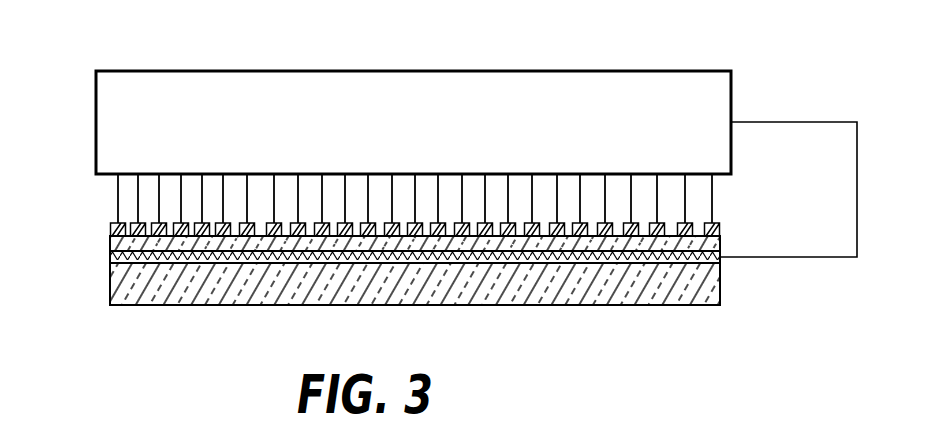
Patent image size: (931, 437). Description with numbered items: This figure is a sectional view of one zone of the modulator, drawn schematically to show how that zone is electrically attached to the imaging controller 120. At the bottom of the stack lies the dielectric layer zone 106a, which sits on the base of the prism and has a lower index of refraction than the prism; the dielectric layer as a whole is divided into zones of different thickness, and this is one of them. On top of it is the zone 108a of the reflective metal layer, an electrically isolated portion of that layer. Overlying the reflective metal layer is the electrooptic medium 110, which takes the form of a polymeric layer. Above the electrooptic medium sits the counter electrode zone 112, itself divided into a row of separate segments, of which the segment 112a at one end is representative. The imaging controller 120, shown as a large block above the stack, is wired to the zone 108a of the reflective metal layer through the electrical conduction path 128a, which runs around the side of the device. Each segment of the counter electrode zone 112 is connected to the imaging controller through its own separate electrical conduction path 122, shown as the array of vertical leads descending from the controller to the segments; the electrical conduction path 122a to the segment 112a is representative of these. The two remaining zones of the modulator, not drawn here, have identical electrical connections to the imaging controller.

The imaging controller 120 is at (420, 71).
The electrical conduction path 122 is at (118, 197).
The electrical conduction path 122a is at (712, 183).
The counter electrode zone 112 is at (108, 228).
The segment 112a is at (720, 228).
The electrooptic medium 110 is at (110, 245).
The zone of the reflective metal layer 108a is at (110, 258).
The dielectric layer zone 106a is at (681, 306).
The electrical conduction path 128a is at (784, 122).